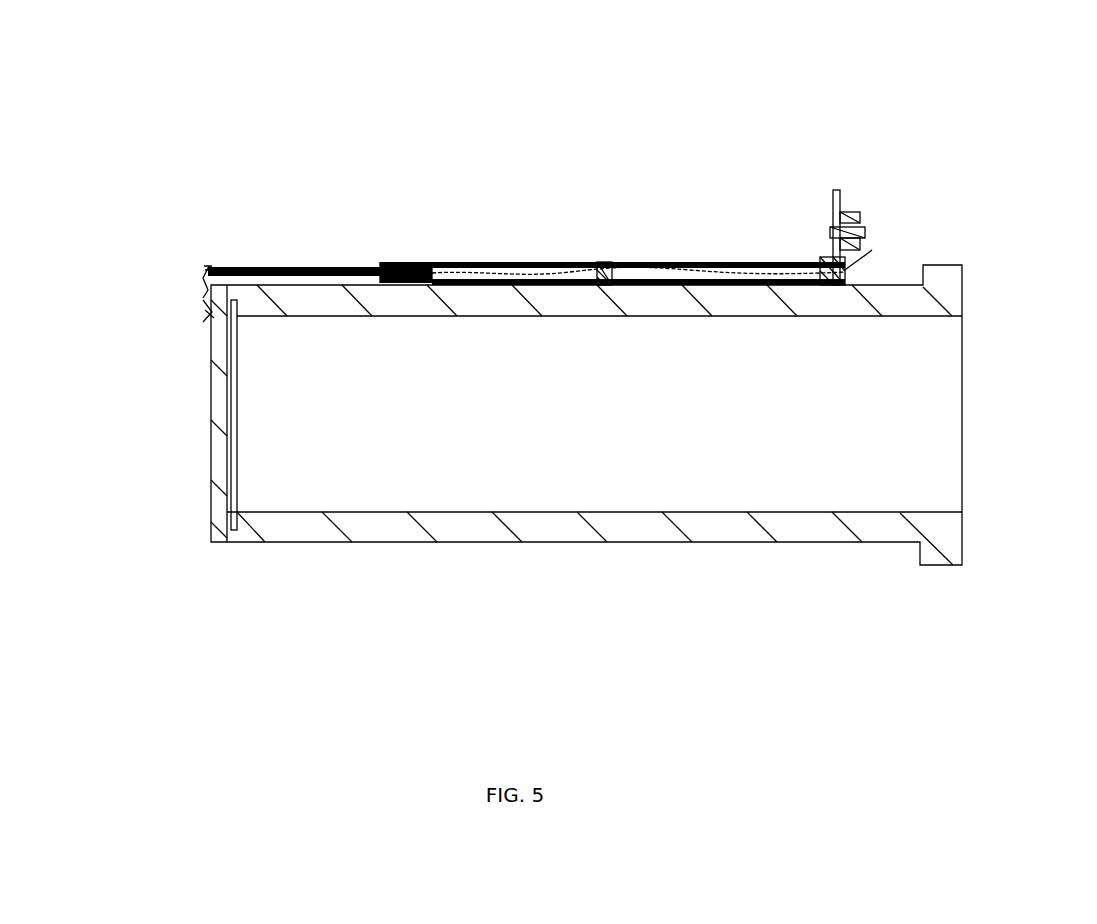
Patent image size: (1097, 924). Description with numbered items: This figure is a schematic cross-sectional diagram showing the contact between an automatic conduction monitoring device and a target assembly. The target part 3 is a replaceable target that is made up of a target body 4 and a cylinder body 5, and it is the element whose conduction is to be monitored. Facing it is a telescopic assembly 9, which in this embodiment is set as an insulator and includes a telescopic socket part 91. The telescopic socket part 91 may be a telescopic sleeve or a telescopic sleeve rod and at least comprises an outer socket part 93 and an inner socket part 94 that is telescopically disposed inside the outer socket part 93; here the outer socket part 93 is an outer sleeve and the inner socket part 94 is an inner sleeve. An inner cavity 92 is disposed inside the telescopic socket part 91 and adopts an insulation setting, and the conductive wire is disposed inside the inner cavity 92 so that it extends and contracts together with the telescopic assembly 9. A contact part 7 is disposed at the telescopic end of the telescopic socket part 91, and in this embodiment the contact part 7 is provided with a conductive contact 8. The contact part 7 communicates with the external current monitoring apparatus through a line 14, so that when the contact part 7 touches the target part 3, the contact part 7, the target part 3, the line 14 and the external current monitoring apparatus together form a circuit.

The target part 3 is at (565, 575).
The target body 4 is at (215, 487).
The cylinder body 5 is at (305, 525).
The contact part 7 is at (205, 290).
The conductive contact 8 is at (205, 312).
The telescopic assembly 9 is at (668, 240).
The telescopic socket part 91 is at (462, 262).
The inner cavity 92 is at (745, 272).
The outer socket part 93 is at (617, 262).
The inner socket part 94 is at (322, 268).
The line 14 is at (893, 240).